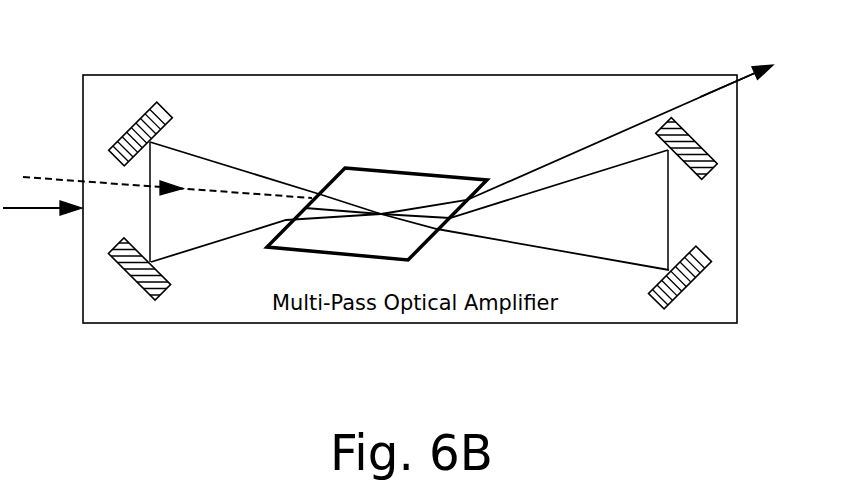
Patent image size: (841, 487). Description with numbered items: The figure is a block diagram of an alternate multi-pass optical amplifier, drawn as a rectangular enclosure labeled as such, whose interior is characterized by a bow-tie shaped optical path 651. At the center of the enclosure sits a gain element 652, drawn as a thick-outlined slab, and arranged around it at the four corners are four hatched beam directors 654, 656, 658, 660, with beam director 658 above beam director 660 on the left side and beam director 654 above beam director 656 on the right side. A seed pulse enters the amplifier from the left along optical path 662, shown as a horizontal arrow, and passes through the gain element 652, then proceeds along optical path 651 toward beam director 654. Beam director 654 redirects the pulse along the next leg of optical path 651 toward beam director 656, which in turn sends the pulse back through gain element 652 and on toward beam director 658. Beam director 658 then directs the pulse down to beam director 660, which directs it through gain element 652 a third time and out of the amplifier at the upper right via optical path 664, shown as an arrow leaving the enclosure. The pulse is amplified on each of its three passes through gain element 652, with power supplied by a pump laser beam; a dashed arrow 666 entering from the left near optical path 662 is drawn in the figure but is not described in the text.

The optical path 651 is at (213, 162).
The gain element 652 is at (397, 178).
The beam director 654 is at (702, 176).
The beam director 656 is at (647, 295).
The beam director 658 is at (127, 126).
The beam director 660 is at (127, 282).
The optical path 662 is at (13, 210).
The optical path 664 is at (745, 73).
The pump beam 666 is at (80, 180).